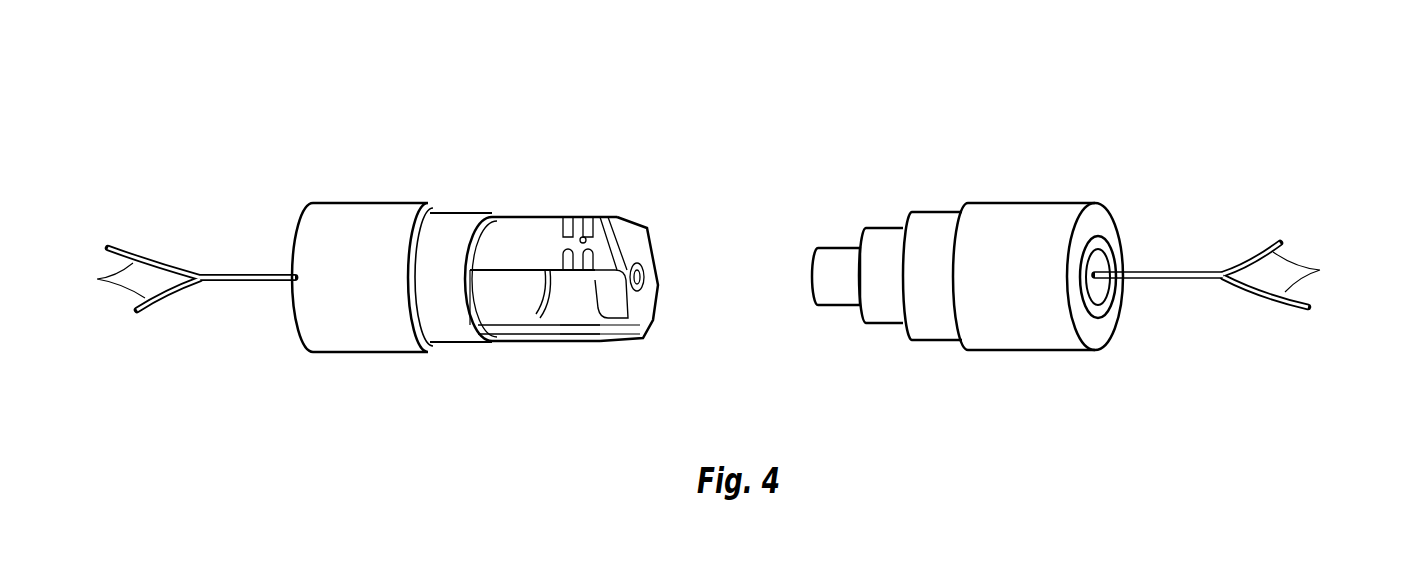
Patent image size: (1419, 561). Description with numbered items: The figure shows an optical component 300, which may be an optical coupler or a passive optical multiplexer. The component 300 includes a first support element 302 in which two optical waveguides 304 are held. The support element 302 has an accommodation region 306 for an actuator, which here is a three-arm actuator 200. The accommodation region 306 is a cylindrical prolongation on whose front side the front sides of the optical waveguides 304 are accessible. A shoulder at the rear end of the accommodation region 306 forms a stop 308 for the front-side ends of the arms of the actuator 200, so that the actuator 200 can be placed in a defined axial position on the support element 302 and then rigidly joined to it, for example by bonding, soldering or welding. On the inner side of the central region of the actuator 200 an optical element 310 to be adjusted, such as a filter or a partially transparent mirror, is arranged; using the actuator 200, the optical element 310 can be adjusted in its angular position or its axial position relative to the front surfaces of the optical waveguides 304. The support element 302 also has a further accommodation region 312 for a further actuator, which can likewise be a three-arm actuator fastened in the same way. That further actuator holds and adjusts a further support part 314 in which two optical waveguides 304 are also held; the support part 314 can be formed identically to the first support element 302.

The optical component 300 is at (602, 130).
The first support element 302 is at (366, 222).
The optical waveguides 304 is at (97, 279).
The accommodation region 306 is at (498, 302).
The stop 308 is at (470, 302).
The optical element 310 is at (605, 300).
The further accommodation region 312 is at (451, 232).
The further support part 314 is at (1021, 220).
The three-arm actuator 200 is at (548, 345).